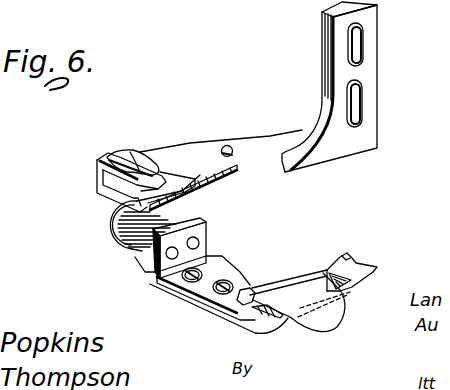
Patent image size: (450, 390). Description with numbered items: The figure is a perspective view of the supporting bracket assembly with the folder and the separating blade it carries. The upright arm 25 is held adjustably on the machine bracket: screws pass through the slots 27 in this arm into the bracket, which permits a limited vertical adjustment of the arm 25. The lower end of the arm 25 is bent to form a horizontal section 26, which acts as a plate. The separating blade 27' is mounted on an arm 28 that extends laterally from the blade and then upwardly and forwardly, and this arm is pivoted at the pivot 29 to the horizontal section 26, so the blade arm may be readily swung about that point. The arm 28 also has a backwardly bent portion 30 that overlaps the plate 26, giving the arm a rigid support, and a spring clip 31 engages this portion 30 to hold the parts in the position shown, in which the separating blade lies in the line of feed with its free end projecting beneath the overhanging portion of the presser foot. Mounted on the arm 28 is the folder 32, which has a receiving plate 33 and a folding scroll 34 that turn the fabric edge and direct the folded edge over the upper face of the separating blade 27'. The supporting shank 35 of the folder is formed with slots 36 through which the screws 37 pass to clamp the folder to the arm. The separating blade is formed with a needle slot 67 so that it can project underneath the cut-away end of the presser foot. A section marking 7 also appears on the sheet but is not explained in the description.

The section line 7- 7 is at (112, 150).
The arm 25 is at (333, 48).
The horizontal section 26 is at (253, 140).
The slots 27 is at (386, 75).
The separating blade 27' is at (377, 283).
The arm 28 is at (187, 208).
The pivot 29 is at (224, 145).
The backwardly bent portion 30 is at (107, 168).
The spring clip 31 is at (132, 162).
The folder 32 is at (275, 288).
The receiving plate 33 is at (340, 307).
The folding scroll 34 is at (265, 312).
The supporting shank 35 is at (207, 275).
The slots 36 is at (178, 278).
The screws 37 is at (218, 292).
The needle slot 67 is at (351, 262).